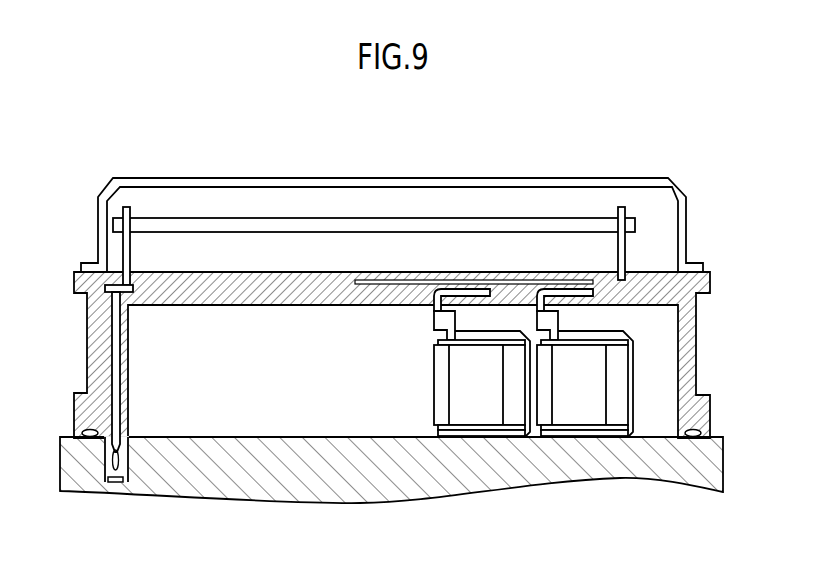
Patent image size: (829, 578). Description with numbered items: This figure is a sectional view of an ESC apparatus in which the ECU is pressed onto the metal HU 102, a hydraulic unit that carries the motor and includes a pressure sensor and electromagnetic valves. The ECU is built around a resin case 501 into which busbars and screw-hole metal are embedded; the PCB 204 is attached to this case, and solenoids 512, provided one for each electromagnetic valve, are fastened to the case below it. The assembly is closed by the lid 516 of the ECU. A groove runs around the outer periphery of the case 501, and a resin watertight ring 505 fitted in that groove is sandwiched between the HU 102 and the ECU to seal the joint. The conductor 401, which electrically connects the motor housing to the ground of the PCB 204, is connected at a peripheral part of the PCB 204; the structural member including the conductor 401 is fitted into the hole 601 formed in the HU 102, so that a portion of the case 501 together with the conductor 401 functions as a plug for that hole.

The HU 102 is at (650, 468).
The PCB 204 is at (368, 218).
The conductor 401 is at (110, 481).
The case 501 is at (78, 282).
The watertight ring 505 is at (88, 430).
The solenoids 512 is at (478, 415).
The lid 516 is at (285, 178).
The hole 601 is at (128, 458).